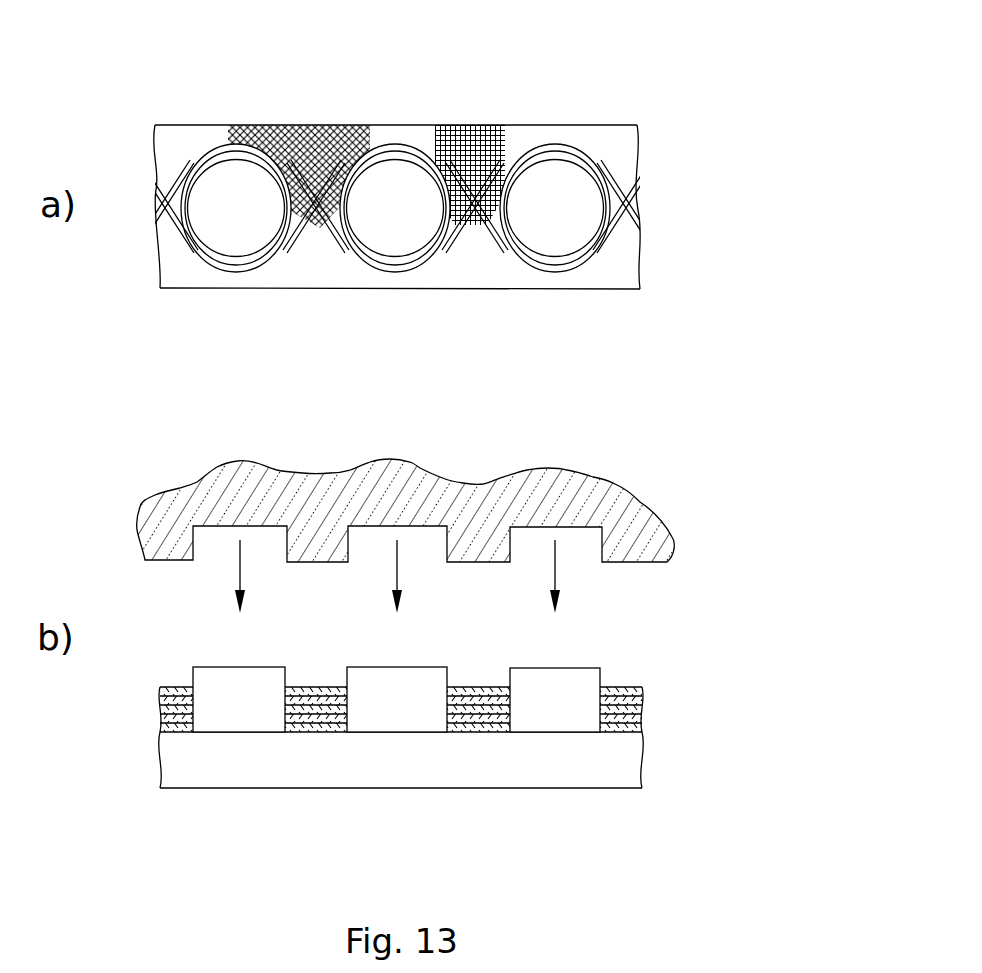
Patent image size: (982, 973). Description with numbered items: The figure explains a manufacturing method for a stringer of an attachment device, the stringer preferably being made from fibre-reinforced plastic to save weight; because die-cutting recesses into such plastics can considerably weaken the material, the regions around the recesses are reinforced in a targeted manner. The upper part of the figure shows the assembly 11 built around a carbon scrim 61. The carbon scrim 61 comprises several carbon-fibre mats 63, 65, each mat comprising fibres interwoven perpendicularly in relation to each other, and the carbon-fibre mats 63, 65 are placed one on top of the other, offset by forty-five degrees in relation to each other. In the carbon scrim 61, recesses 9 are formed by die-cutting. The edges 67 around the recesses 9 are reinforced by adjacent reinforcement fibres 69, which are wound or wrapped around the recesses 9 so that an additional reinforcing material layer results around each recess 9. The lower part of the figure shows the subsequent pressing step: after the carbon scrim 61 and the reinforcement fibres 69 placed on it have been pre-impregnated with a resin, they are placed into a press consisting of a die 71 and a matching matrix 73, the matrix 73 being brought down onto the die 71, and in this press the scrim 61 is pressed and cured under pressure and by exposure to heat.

The composite sheet assembly 11 is at (588, 70).
The recess 9 is at (393, 168).
The carbon scrim 61 is at (598, 140).
The carbon-fibre mat 63 is at (463, 128).
The carbon-fibre mat 65 is at (285, 127).
The edge 67 is at (205, 162).
The reinforcement fibres 69 is at (163, 172).
The die 71 is at (627, 763).
The matrix 73 is at (643, 532).